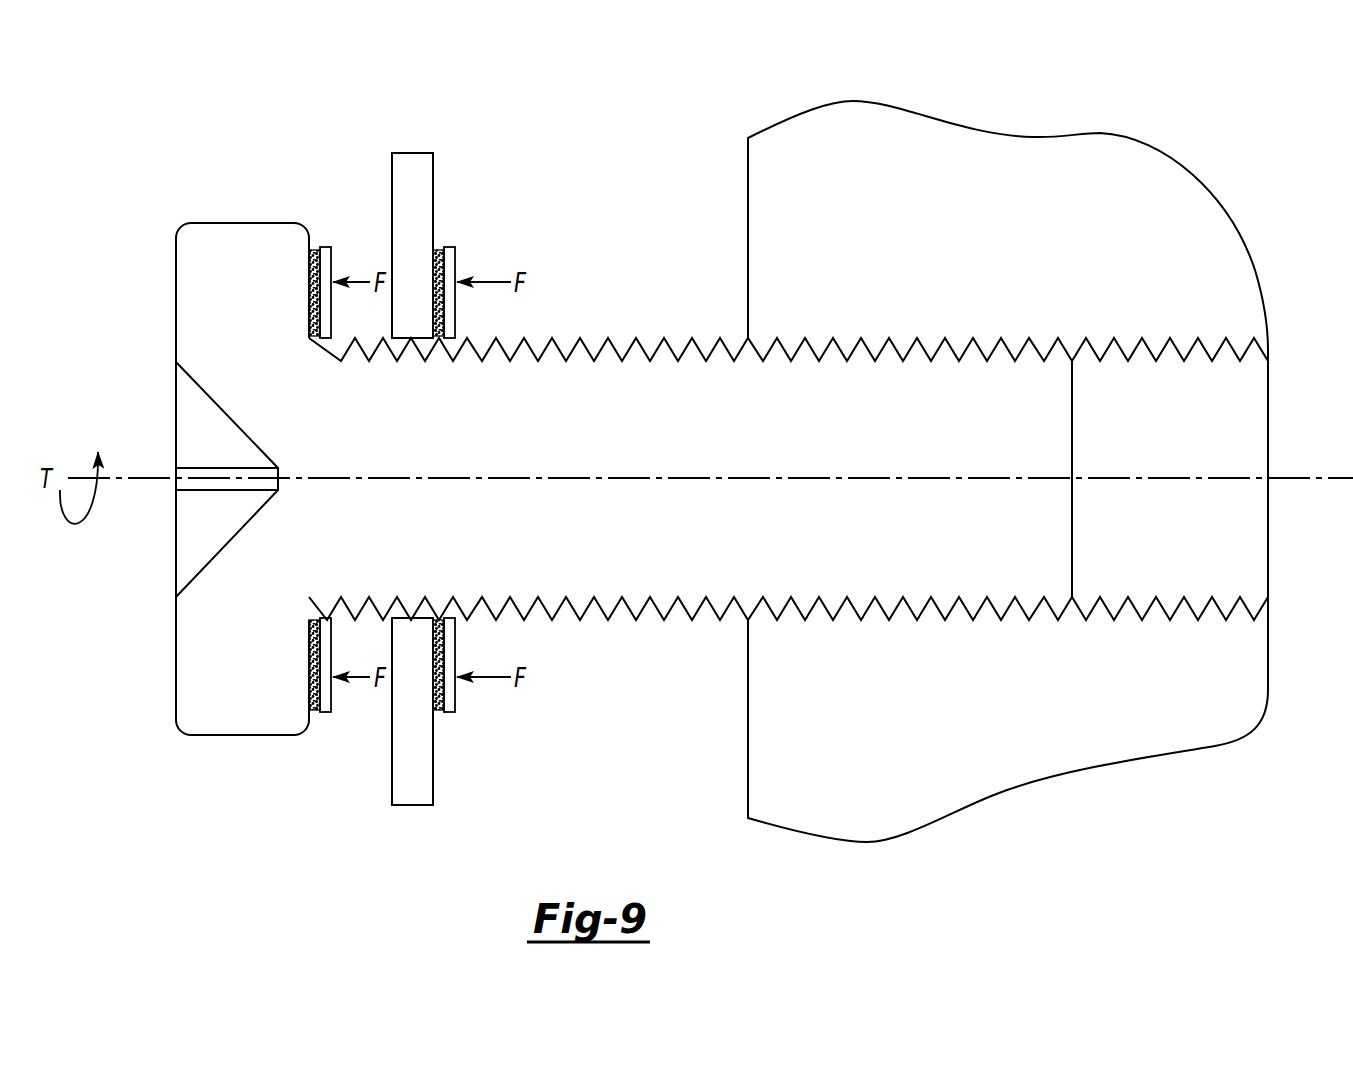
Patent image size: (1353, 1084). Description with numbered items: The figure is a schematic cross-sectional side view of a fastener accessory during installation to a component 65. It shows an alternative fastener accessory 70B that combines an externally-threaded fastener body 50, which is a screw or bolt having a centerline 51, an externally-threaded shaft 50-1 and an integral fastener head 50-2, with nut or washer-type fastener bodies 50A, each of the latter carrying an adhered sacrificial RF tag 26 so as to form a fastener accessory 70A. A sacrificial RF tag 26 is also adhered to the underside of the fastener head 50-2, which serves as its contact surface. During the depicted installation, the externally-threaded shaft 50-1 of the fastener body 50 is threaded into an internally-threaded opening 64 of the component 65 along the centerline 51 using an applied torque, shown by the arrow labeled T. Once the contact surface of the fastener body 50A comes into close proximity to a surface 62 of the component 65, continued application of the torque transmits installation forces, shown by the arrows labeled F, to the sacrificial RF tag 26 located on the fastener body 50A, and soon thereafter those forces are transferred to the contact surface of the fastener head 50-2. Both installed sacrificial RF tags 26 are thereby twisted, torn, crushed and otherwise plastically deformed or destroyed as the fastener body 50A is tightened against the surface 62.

The sacrificial RF tag 26 is at (349, 381).
The fastener body 50 is at (572, 520).
The externally-threaded shaft 50-1 is at (622, 446).
The fastener head 50-2 is at (248, 723).
The fastener body 50A is at (473, 758).
The centerline 51 is at (137, 478).
The surface 62 is at (970, 490).
The internally-threaded opening 64 is at (1163, 602).
The component 65 is at (947, 713).
The fastener accessory 70A is at (267, 160).
The fastener accessory 70B is at (467, 130).